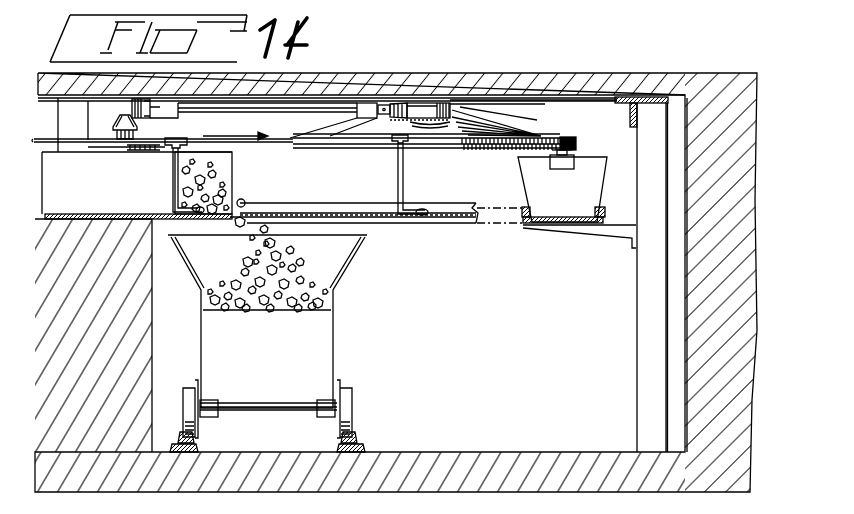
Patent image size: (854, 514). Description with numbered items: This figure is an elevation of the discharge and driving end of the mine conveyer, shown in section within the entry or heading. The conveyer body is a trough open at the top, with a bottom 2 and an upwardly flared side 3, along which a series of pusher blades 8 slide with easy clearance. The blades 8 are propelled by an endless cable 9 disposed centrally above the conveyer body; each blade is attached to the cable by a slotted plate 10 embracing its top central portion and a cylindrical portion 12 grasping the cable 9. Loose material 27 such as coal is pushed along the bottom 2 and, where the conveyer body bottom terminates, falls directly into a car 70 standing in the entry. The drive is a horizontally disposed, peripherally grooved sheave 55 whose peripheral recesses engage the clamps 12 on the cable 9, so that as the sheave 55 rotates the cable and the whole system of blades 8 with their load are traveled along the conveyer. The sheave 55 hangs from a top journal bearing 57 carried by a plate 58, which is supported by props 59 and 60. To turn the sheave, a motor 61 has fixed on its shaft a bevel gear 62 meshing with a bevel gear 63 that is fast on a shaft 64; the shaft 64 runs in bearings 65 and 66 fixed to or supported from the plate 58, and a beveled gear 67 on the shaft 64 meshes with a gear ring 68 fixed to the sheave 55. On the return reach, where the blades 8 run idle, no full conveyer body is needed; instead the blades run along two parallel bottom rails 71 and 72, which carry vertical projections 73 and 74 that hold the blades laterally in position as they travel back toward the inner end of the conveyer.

The bottom 2 is at (93, 214).
The side 3 is at (231, 173).
The pusher blades 8 is at (173, 178).
The endless cable 9 is at (293, 143).
The slotted plate 10 is at (172, 161).
The cylindrical portion 12 is at (183, 139).
The material 27 is at (269, 242).
The sheave 55 is at (543, 138).
The hanging top journal bearing 57 is at (541, 117).
The plate 58 is at (575, 92).
The prop 59 is at (657, 108).
The prop 60 is at (58, 116).
The motor 61 is at (124, 153).
The bevel gear 62 is at (138, 134).
The bevel gear 63 is at (131, 105).
The shaft 64 is at (295, 114).
The bearing 65 is at (213, 104).
The bearing 66 is at (357, 118).
The beveled gear 67 is at (460, 108).
The gear ring 68 is at (431, 122).
The car 70 is at (337, 345).
The bottom rail 71 is at (529, 229).
The bottom rail 72 is at (593, 227).
The vertical projection 73 is at (522, 214).
The vertical projection 74 is at (604, 212).